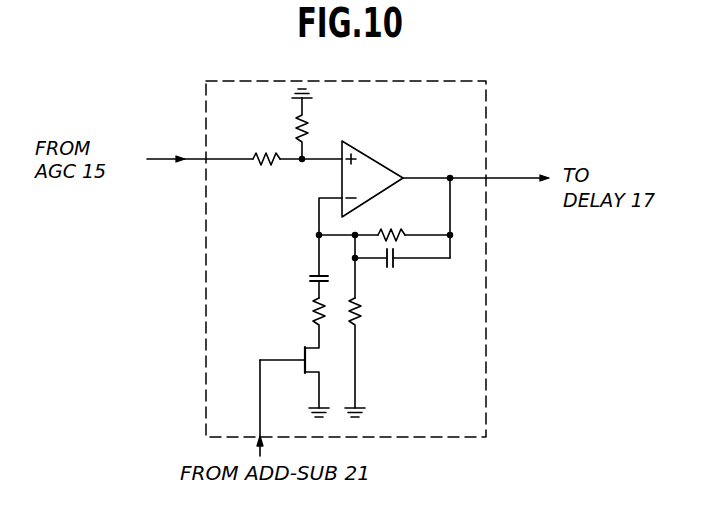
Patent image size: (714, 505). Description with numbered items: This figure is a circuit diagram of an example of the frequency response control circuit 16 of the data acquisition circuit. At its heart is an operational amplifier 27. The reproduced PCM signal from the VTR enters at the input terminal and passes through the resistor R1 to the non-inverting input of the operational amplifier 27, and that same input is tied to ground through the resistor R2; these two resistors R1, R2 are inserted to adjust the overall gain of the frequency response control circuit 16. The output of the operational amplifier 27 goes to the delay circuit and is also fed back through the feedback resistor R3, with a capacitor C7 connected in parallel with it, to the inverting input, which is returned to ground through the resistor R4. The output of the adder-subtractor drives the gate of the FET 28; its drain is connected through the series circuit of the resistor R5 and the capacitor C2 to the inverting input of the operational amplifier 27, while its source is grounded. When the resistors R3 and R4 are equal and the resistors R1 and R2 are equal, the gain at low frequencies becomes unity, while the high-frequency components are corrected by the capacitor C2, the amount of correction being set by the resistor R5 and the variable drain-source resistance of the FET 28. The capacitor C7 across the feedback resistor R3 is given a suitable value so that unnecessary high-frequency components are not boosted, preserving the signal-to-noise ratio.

The frequency response control circuit 16 is at (486, 298).
The operational amplifier 27 is at (377, 164).
The FET 28 is at (302, 368).
The resistor R1 is at (269, 172).
The resistor R2 is at (317, 124).
The feedback resistor R3 is at (384, 237).
The resistor R4 is at (361, 320).
The resistor R5 is at (314, 315).
The capacitor C2 is at (304, 268).
The feedback capacitor C7 is at (391, 268).